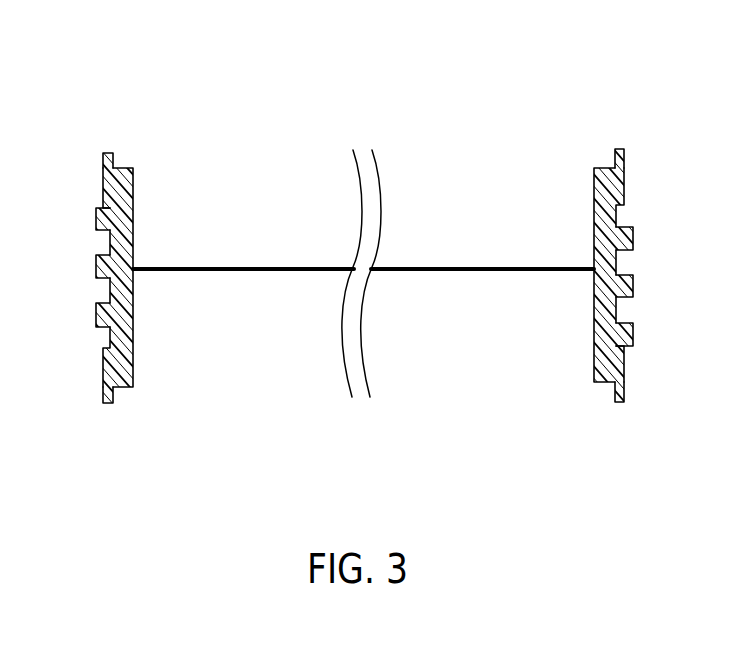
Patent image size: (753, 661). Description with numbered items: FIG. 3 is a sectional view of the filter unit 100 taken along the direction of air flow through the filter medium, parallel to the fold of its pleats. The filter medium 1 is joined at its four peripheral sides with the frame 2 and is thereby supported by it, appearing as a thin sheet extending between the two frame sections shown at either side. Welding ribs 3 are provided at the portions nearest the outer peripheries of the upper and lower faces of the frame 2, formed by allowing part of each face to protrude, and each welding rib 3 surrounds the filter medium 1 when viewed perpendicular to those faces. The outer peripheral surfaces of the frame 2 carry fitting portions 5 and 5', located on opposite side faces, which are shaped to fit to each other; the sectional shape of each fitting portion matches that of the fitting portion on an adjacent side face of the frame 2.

The filter unit 100 is at (103, 114).
The filter medium 1 is at (463, 266).
The frame 2 is at (608, 356).
The welding rib 3 is at (623, 150).
The fitting portion 5 is at (650, 278).
The fitting portion 5' is at (75, 283).